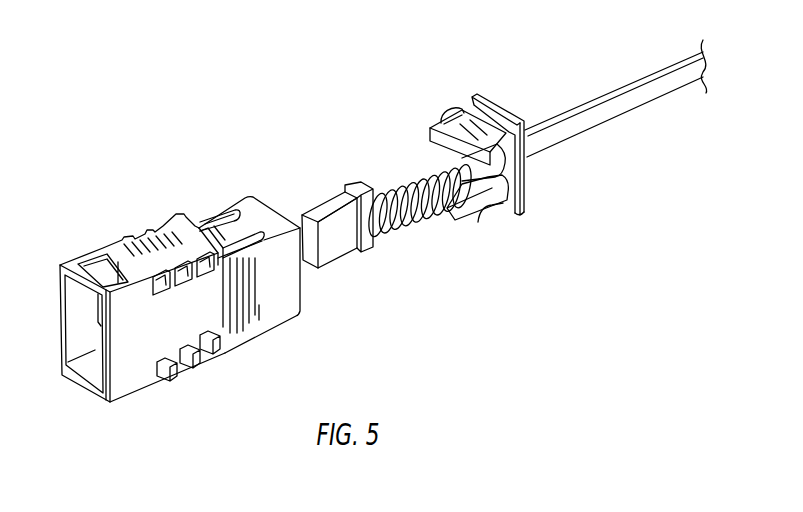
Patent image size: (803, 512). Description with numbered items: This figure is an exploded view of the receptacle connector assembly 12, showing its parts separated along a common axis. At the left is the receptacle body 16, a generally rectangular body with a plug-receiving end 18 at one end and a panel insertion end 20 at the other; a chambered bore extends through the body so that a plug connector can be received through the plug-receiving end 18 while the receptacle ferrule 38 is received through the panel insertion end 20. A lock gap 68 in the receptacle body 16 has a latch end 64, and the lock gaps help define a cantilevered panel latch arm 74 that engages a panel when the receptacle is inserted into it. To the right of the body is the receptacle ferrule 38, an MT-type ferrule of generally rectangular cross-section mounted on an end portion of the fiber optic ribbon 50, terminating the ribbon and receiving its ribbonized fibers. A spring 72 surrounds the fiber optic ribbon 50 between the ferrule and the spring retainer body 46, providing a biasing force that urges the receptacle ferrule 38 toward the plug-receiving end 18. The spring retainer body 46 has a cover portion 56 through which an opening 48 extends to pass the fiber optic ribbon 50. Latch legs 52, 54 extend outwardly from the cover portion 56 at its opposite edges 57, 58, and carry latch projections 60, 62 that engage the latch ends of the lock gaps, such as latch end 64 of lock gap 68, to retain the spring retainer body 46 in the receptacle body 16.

The receptacle connector assembly 12 is at (220, 112).
The receptacle body 16 is at (187, 386).
The plug-receiving end 18 is at (83, 390).
The panel insertion end 20 is at (301, 299).
The receptacle ferrule 38 is at (346, 254).
The spring retainer body 46 is at (530, 96).
The opening 48 is at (527, 170).
The fiber optic ribbon 50 is at (650, 100).
The latch leg 52 is at (467, 110).
The latch leg 54 is at (497, 218).
The cover portion 56 is at (527, 198).
The edge 57 is at (488, 100).
The edge 58 is at (522, 217).
The latch projection 60 is at (447, 117).
The latch projection 62 is at (470, 226).
The latch end 64 is at (239, 208).
The lock gap 68 is at (214, 229).
The spring 72 is at (403, 236).
The cantilevered panel latch arm 74 is at (288, 147).